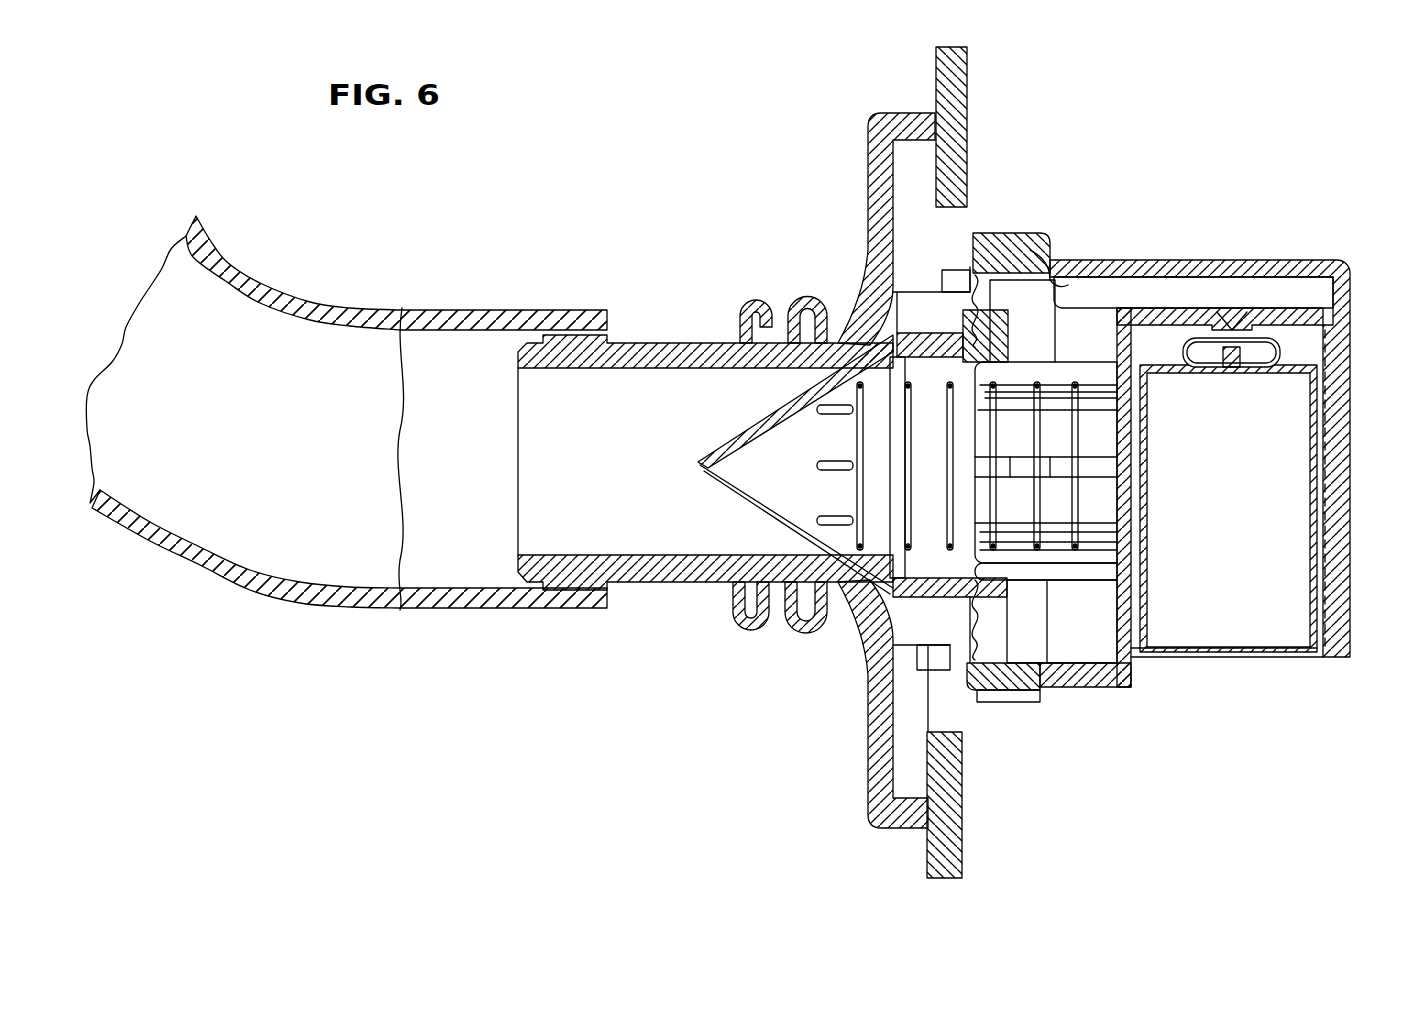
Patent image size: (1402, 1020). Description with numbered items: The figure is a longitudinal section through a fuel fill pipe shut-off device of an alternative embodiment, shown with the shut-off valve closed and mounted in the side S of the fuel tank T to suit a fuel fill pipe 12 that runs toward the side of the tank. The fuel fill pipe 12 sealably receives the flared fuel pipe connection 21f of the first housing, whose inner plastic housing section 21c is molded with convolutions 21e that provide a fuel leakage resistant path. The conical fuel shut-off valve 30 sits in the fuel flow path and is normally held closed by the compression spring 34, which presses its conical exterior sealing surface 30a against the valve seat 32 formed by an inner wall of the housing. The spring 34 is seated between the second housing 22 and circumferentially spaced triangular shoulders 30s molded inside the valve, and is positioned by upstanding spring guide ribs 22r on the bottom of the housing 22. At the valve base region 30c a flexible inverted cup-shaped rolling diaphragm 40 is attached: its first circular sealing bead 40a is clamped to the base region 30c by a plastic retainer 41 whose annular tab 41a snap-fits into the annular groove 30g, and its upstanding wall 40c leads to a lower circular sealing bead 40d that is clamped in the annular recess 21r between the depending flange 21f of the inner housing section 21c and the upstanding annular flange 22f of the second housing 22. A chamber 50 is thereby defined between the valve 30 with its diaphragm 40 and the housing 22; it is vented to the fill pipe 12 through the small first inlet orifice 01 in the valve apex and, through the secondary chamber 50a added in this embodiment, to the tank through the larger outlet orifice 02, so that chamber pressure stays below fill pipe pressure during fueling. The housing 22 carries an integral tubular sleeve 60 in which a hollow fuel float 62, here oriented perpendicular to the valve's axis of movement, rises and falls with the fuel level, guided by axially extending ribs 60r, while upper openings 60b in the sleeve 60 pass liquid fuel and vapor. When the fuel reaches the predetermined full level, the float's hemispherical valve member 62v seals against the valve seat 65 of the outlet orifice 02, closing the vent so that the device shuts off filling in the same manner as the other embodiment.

The fuel fill pipe 12 is at (478, 612).
The fuel pipe connection 21f is at (630, 343).
The convolutions 21e is at (795, 635).
The inner plastic housing section 21c is at (878, 650).
The annular recess 21r is at (1010, 690).
The valve seat 32 is at (766, 299).
The fuel tank T is at (965, 64).
The side of the fuel tank S is at (935, 88).
The flexible rolling diaphragm 40 is at (1105, 287).
The first circular sealing bead 40a is at (963, 255).
The upstanding wall 40c is at (998, 255).
The lower circular sealing bead 40d is at (1030, 252).
The plastic retainer 41 is at (1042, 620).
The annular tab 41a is at (1110, 680).
The fuel shut-off valve 30 is at (800, 395).
The conical exterior sealing surface 30a is at (805, 398).
The first inlet orifice 01 is at (698, 462).
The compression spring 34 is at (855, 438).
The triangular shoulders 30s is at (855, 552).
The base region 30c is at (955, 630).
The annular groove 30g is at (1013, 572).
The second housing 22 is at (1022, 230).
The upstanding annular flange 22f is at (1017, 288).
The spring guide ribs 22r is at (1095, 502).
The chamber 50 is at (1108, 528).
The secondary chamber 50a is at (1200, 316).
The valve seat 65 is at (1252, 318).
The outlet orifice 02 is at (1232, 330).
The tubular sleeve 60 is at (1348, 256).
The upper openings 60b is at (1262, 365).
The axially extending ribs 60r is at (1140, 612).
The fuel float 62 is at (1310, 533).
The hemispherical valve member 62v is at (1215, 352).